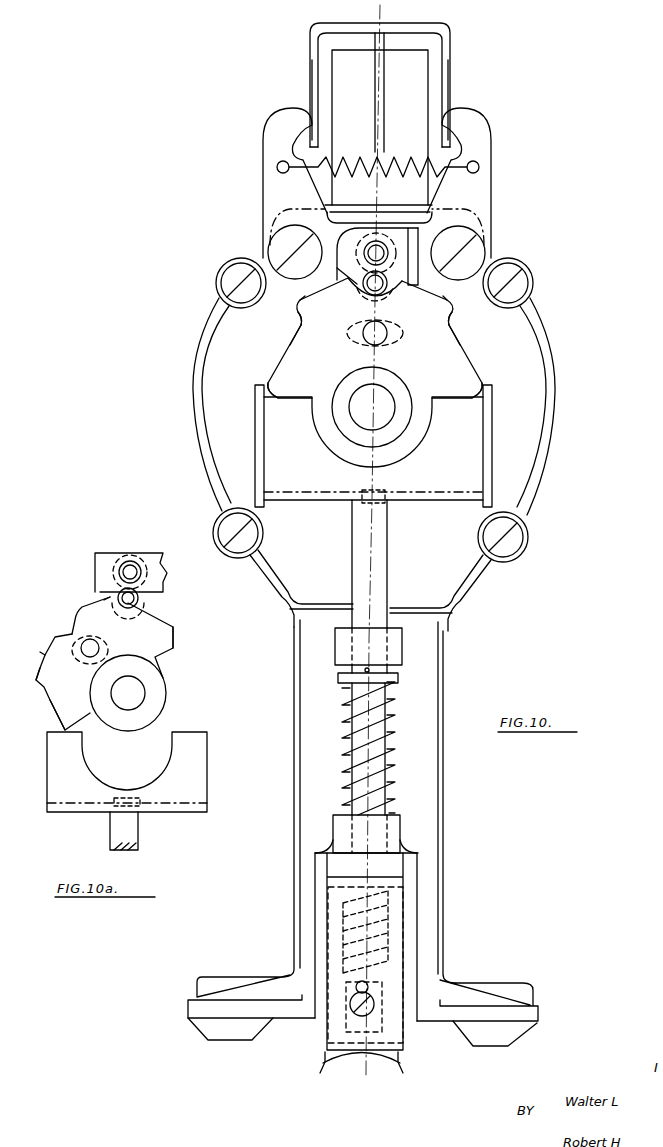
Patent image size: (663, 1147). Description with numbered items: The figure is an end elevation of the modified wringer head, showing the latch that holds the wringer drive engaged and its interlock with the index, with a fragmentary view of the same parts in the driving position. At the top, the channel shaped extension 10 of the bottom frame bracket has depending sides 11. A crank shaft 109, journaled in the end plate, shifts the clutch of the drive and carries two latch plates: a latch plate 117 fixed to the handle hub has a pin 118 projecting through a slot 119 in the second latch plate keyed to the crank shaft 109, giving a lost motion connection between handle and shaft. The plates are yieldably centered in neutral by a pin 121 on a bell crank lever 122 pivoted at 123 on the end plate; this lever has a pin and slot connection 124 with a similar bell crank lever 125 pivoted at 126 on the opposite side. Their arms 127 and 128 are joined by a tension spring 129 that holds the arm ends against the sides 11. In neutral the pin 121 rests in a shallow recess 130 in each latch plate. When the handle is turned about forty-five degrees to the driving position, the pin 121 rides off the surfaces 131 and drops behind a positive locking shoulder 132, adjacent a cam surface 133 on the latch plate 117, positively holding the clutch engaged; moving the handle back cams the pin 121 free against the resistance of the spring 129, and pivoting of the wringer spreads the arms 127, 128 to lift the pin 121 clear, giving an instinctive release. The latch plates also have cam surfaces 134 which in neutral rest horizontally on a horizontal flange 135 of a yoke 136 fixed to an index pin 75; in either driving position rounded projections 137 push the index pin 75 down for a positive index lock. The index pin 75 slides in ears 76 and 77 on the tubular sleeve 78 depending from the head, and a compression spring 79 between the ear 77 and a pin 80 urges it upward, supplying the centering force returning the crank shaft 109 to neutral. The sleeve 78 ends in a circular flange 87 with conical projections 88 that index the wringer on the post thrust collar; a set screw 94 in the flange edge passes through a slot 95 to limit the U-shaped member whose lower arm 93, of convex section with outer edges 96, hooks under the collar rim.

In FIG. 10, the channel shaped extension 10 is at (406, 27).
In FIG. 10, the depending sides 11 is at (313, 71).
In FIG. 10, the tension spring 129 is at (388, 165).
In FIG. 10, the arm 128 is at (263, 197).
In FIG. 10, the arm 127 is at (491, 199).
In FIG. 10, the bell crank lever 125 is at (334, 227).
In FIG. 10, the pivot 126 is at (279, 248).
In FIG. 10, the pivot 123 is at (480, 251).
In FIG. 10, the pin and slot connection 124 is at (367, 259).
In FIG. 10A, the pin and slot connection 124 is at (128, 565).
In FIG. 10, the shallow recess 130 is at (364, 289).
In FIG. 10A, the shallow recess 130 is at (80, 611).
In FIG. 10, the bell crank lever 122 is at (440, 290).
In FIG. 10, the pin 121 is at (371, 294).
In FIG. 10A, the pin 121 is at (144, 602).
In FIG. 10, the surfaces 131 is at (318, 298).
In FIG. 10A, the surfaces 131 is at (112, 607).
In FIG. 10, the positive locking shoulder 132 is at (300, 318).
In FIG. 10A, the positive locking shoulder 132 is at (38, 682).
In FIG. 10, the cam surfaces 133 is at (312, 327).
In FIG. 10, the latch plate 117 is at (453, 364).
In FIG. 10A, the latch plate 117 is at (104, 666).
In FIG. 10, the rounded projections 137 is at (272, 383).
In FIG. 10A, the rounded projections 137 is at (172, 628).
In FIG. 10, the pin 118 is at (383, 327).
In FIG. 10A, the pin 118 is at (100, 652).
In FIG. 10, the slot 119 is at (391, 345).
In FIG. 10A, the slot 119 is at (83, 673).
In FIG. 10, the crank shaft 109 is at (366, 422).
In FIG. 10A, the crank shaft 109 is at (143, 685).
In FIG. 10, the cam surfaces 134 is at (292, 400).
In FIG. 10, the horizontal flange 135 is at (276, 402).
In FIG. 10, the yoke 136 is at (444, 500).
In FIG. 10A, the yoke 136 is at (85, 812).
In FIG. 10, the index pin 75 is at (355, 568).
In FIG. 10A, the index pin 75 is at (138, 833).
In FIG. 10, the ear 76 is at (382, 650).
In FIG. 10, the pin 80 is at (398, 677).
In FIG. 10, the compression spring 79 is at (390, 729).
In FIG. 10, the ear 77 is at (400, 824).
In FIG. 10, the tubular sleeve 78 is at (443, 838).
In FIG. 10, the circular flange 87 is at (540, 1017).
In FIG. 10, the conical projections 88 is at (208, 1034).
In FIG. 10, the slot 95 is at (370, 987).
In FIG. 10, the set screw 94 is at (355, 1008).
In FIG. 10, the lower arm 93 is at (365, 1054).
In FIG. 10, the outer edges 96 is at (325, 1065).